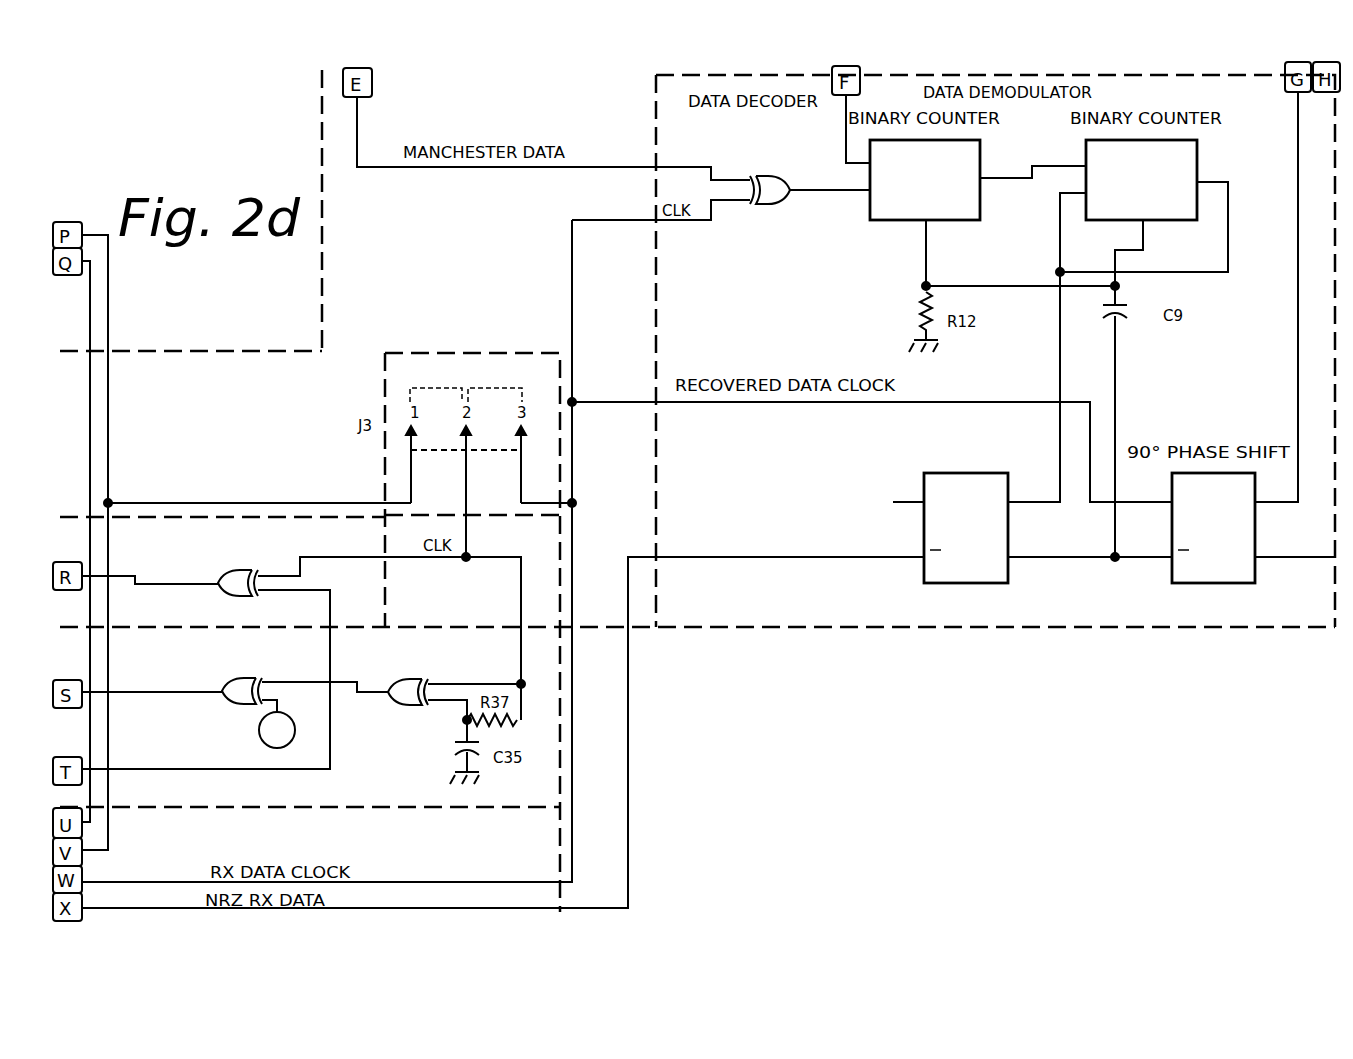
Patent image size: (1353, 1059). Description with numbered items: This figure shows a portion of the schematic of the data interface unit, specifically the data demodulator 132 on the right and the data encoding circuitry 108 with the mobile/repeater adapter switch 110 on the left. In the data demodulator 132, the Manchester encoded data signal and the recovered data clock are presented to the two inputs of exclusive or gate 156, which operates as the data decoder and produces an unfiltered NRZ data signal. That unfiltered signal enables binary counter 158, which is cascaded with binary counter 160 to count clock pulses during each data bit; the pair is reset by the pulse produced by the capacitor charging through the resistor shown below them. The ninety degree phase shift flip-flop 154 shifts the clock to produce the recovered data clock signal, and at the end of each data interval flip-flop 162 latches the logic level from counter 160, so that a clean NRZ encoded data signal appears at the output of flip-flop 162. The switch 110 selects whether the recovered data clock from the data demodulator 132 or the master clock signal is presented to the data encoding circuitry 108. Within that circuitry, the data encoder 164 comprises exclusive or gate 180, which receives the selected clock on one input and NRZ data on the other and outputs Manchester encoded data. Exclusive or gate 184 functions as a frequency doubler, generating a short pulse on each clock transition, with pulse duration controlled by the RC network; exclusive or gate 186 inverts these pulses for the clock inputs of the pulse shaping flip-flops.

The data encoding circuitry 108 is at (567, 711).
The mobile/repeater adapter switch 110 is at (437, 336).
The data demodulator 132 is at (1085, 630).
The 90° phase shift flip-flop 154 is at (1192, 583).
The exclusive or gate 156 is at (780, 205).
The binary counter 158 is at (965, 220).
The binary counter 160 is at (1197, 150).
The flip-flop 162 is at (955, 473).
The data encoder 164 is at (385, 595).
The exclusive or gate 180 is at (228, 594).
The exclusive or gate 184 is at (396, 706).
The exclusive or gate 186 is at (228, 702).